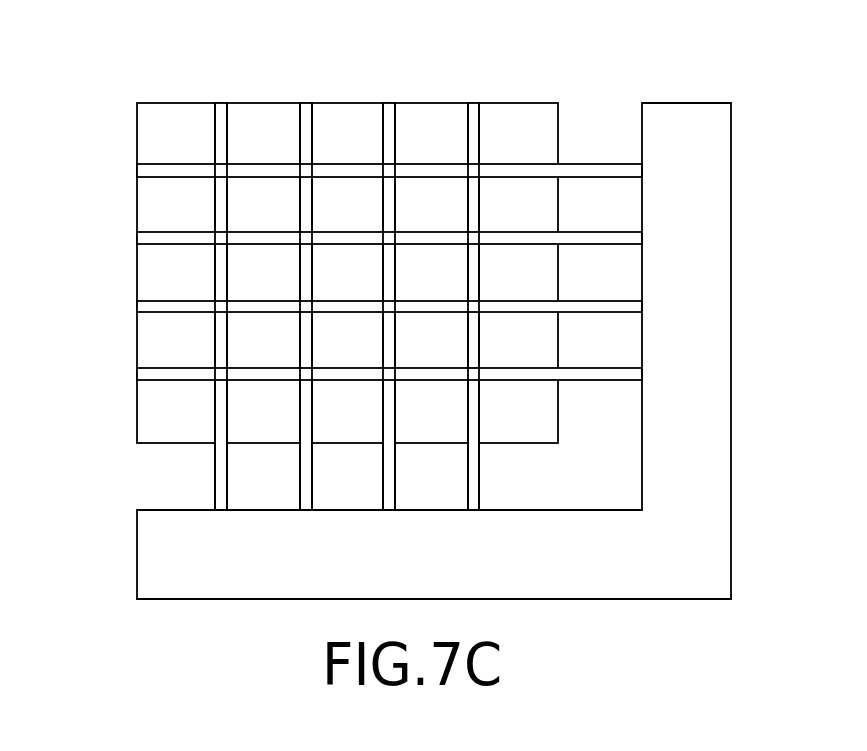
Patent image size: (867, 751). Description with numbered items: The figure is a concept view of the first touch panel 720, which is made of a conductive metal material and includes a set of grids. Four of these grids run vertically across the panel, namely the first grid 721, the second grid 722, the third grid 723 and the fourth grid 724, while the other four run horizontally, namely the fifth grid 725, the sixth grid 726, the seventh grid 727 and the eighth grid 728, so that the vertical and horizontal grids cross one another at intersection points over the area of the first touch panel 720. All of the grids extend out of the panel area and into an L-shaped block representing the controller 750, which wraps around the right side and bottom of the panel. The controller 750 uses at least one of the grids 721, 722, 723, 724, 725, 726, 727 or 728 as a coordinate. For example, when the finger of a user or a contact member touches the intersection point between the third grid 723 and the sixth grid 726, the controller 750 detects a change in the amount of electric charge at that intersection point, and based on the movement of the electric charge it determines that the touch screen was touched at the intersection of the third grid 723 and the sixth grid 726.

The first touch panel 720 is at (555, 103).
The first grid 721 is at (218, 103).
The second grid 722 is at (302, 103).
The third grid 723 is at (386, 103).
The fourth grid 724 is at (471, 103).
The fifth grid 725 is at (137, 172).
The sixth grid 726 is at (137, 240).
The seventh grid 727 is at (137, 309).
The eighth grid 728 is at (137, 375).
The controller 750 is at (731, 350).